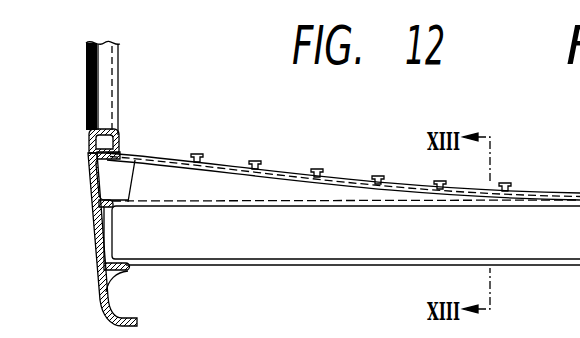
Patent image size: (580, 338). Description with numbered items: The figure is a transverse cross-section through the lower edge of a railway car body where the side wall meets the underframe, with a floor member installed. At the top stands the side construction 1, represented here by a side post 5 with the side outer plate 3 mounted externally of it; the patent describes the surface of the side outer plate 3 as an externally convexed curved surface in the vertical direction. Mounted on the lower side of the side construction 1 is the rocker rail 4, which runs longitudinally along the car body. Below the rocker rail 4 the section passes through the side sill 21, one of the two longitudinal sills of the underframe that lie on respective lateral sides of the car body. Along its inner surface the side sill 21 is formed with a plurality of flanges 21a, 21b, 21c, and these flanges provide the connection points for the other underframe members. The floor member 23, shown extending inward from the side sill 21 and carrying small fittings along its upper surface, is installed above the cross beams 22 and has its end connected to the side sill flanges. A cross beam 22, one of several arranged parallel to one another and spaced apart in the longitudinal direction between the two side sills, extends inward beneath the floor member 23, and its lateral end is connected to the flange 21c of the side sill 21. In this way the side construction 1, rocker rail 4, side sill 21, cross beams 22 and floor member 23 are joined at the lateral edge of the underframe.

The side construction 1 is at (97, 58).
The side outer plate 3 is at (90, 100).
The side post 5 is at (110, 113).
The rocker rail 4 is at (92, 147).
The side sill 21 is at (90, 200).
The flange 21a is at (93, 173).
The flange 21b is at (97, 235).
The flange 21c is at (117, 283).
The cross beam 22 is at (357, 253).
The floor member 23 is at (220, 165).